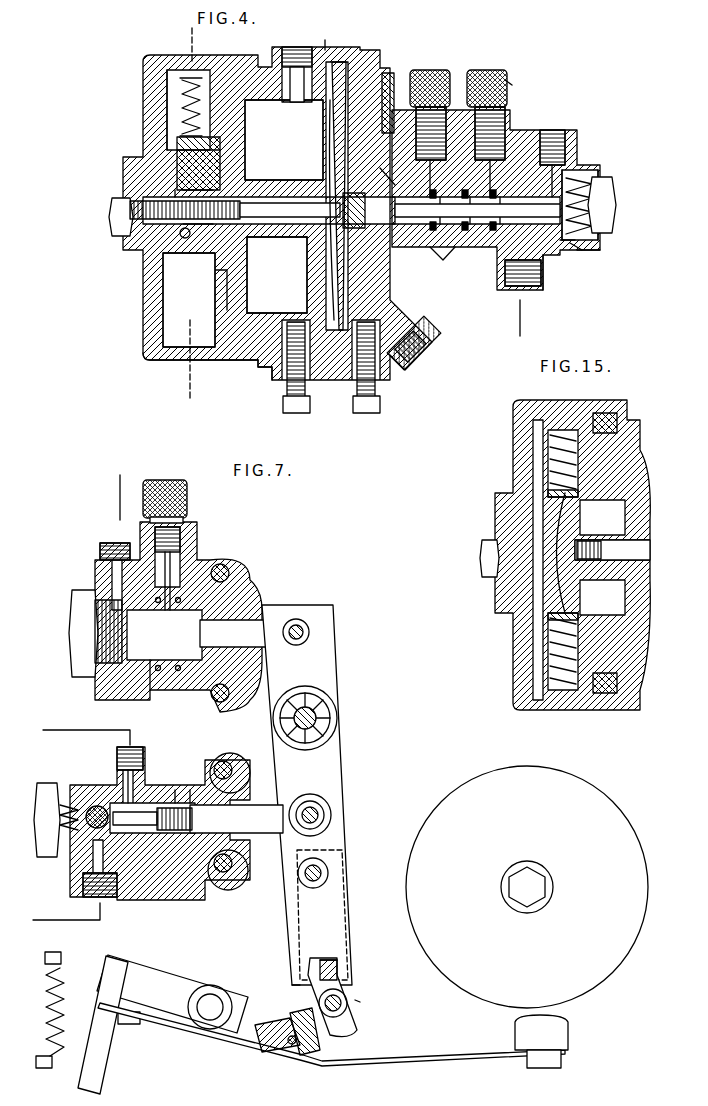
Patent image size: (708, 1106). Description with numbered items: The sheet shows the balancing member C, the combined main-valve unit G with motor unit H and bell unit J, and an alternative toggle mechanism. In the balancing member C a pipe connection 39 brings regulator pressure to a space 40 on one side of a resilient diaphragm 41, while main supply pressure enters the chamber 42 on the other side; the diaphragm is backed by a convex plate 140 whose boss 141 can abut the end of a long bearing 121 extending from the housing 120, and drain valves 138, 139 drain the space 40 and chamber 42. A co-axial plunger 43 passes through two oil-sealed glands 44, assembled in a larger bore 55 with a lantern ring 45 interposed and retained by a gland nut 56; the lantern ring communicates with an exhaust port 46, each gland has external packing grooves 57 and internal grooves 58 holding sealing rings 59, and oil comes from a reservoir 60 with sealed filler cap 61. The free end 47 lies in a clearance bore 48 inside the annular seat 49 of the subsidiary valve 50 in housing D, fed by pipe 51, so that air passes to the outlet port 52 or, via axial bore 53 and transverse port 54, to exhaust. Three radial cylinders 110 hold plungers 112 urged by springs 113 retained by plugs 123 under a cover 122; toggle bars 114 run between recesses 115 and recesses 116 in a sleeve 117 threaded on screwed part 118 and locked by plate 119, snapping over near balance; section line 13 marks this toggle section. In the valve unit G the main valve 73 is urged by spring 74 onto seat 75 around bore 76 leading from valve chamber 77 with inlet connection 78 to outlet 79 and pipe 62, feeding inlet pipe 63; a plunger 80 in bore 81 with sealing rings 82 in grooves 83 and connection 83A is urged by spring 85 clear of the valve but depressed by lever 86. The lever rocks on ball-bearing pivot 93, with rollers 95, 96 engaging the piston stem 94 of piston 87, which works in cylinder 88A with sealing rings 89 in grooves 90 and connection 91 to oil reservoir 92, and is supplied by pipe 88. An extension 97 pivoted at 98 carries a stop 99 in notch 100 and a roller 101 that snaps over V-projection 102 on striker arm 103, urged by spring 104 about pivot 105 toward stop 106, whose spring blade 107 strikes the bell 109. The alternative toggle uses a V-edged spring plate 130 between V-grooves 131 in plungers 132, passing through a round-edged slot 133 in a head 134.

In FIG. 4, the section line 13 is at (190, 42).
In FIG. 4, the pipe connection 39 is at (298, 52).
In FIG. 4, the space 40 is at (262, 117).
In FIG. 4, the resilient diaphragm 41 is at (338, 108).
In FIG. 4, the chamber 42 is at (353, 110).
In FIG. 4, the co-axial plunger 43 is at (445, 262).
In FIG. 4, the oil-sealed glands 44 is at (443, 243).
In FIG. 4, the lantern ring 45 is at (445, 195).
In FIG. 4, the exhaust port 46 is at (453, 245).
In FIG. 4, the free end of plunger 47 is at (573, 177).
In FIG. 4, the clearance bore 48 is at (583, 236).
In FIG. 4, the annular seat 49 is at (573, 187).
In FIG. 4, the subsidiary valve 50 is at (610, 208).
In FIG. 4, the pipe 51 is at (555, 127).
In FIG. 4, the outlet port 52 is at (540, 253).
In FIG. 4, the axial bore 53 is at (573, 163).
In FIG. 4, the transverse port 54 is at (463, 243).
In FIG. 4, the larger bore 55 is at (508, 130).
In FIG. 4, the gland nut 56 is at (387, 180).
In FIG. 4, the external annular packing grooves 57 is at (330, 300).
In FIG. 4, the internal grooves 58 is at (398, 132).
In FIG. 4, the sealing rings 59 is at (340, 235).
In FIG. 4, the oil reservoir 60 is at (452, 123).
In FIG. 4, the sealed filler cap 61 is at (432, 72).
In FIG. 4, the pipe 62 is at (433, 354).
In FIG. 7, the inlet pipe 63 is at (75, 730).
In FIG. 7, the main valve 73 is at (98, 805).
In FIG. 7, the spring 74 is at (55, 857).
In FIG. 7, the annular seat 75 is at (120, 835).
In FIG. 7, the bore 76 is at (155, 835).
In FIG. 7, the valve chamber 77 is at (75, 808).
In FIG. 7, the inlet connection 78 is at (78, 920).
In FIG. 7, the outlet 79 is at (135, 790).
In FIG. 7, the plunger 80 is at (268, 823).
In FIG. 7, the bore 81 is at (237, 860).
In FIG. 7, the sealing rings 82 is at (237, 800).
In FIG. 7, the grooves 83 is at (220, 860).
In FIG. 7, the intermediate connection 83A is at (228, 760).
In FIG. 7, the spring 85 is at (180, 800).
In FIG. 7, the lever 86 is at (315, 665).
In FIG. 7, the piston 87 is at (95, 600).
In FIG. 4, the pipe 88 is at (520, 320).
In FIG. 7, the pipe 88 is at (118, 492).
In FIG. 7, the cylinder 88A is at (115, 665).
In FIG. 7, the sealing rings 89 is at (168, 605).
In FIG. 7, the grooves 90 is at (160, 672).
In FIG. 7, the intermediate connection 91 is at (140, 620).
In FIG. 7, the oil reservoir 92 is at (165, 570).
In FIG. 7, the ball-bearing pivot 93 is at (330, 705).
In FIG. 7, the piston stem 94 is at (245, 625).
In FIG. 7, the roller 95 is at (310, 633).
In FIG. 7, the roller 96 is at (330, 807).
In FIG. 7, the extension 97 is at (313, 980).
In FIG. 7, the pivot 98 is at (322, 875).
In FIG. 7, the projecting stop 99 is at (340, 965).
In FIG. 7, the notch 100 is at (340, 960).
In FIG. 7, the roller 101 is at (337, 1017).
In FIG. 7, the V-projection 102 is at (298, 1042).
In FIG. 7, the striker arm 103 is at (173, 997).
In FIG. 7, the spring 104 is at (87, 1033).
In FIG. 7, the pivot 105 is at (213, 1010).
In FIG. 7, the stop 106 is at (120, 1023).
In FIG. 7, the spring blade 107 is at (483, 1058).
In FIG. 7, the bell 109 is at (453, 990).
In FIG. 4, the radial cylinders 110 is at (180, 77).
In FIG. 4, the plunger 112 is at (190, 150).
In FIG. 4, the spring 113 is at (170, 100).
In FIG. 4, the toggle bar 114 is at (190, 177).
In FIG. 4, the recess 115 is at (187, 160).
In FIG. 4, the recess 116 is at (112, 215).
In FIG. 4, the sleeve 117 is at (180, 233).
In FIG. 4, the screwed part 118 is at (290, 240).
In FIG. 4, the plate 119 is at (180, 197).
In FIG. 4, the housing 120 is at (267, 350).
In FIG. 4, the bearing 121 is at (307, 258).
In FIG. 4, the cover 122 is at (148, 343).
In FIG. 4, the retaining plugs 123 is at (165, 70).
In FIG. 15, the V-edged spring plate 130 is at (557, 515).
In FIG. 15, the V-grooves 131 is at (550, 490).
In FIG. 15, the plungers 132 is at (555, 493).
In FIG. 15, the round-edged slot 133 is at (553, 580).
In FIG. 15, the head 134 is at (545, 560).
In FIG. 4, the drain valve 138 is at (290, 388).
In FIG. 4, the drain valve 139 is at (357, 393).
In FIG. 4, the convex plate 140 is at (320, 117).
In FIG. 4, the backing plate boss 141 is at (310, 280).
In FIG. 4, the balancing member C is at (328, 45).
In FIG. 4, the housing D is at (512, 77).
In FIG. 7, the valve unit G is at (160, 879).
In FIG. 7, the motor unit H is at (258, 580).
In FIG. 7, the bell unit J is at (384, 1048).